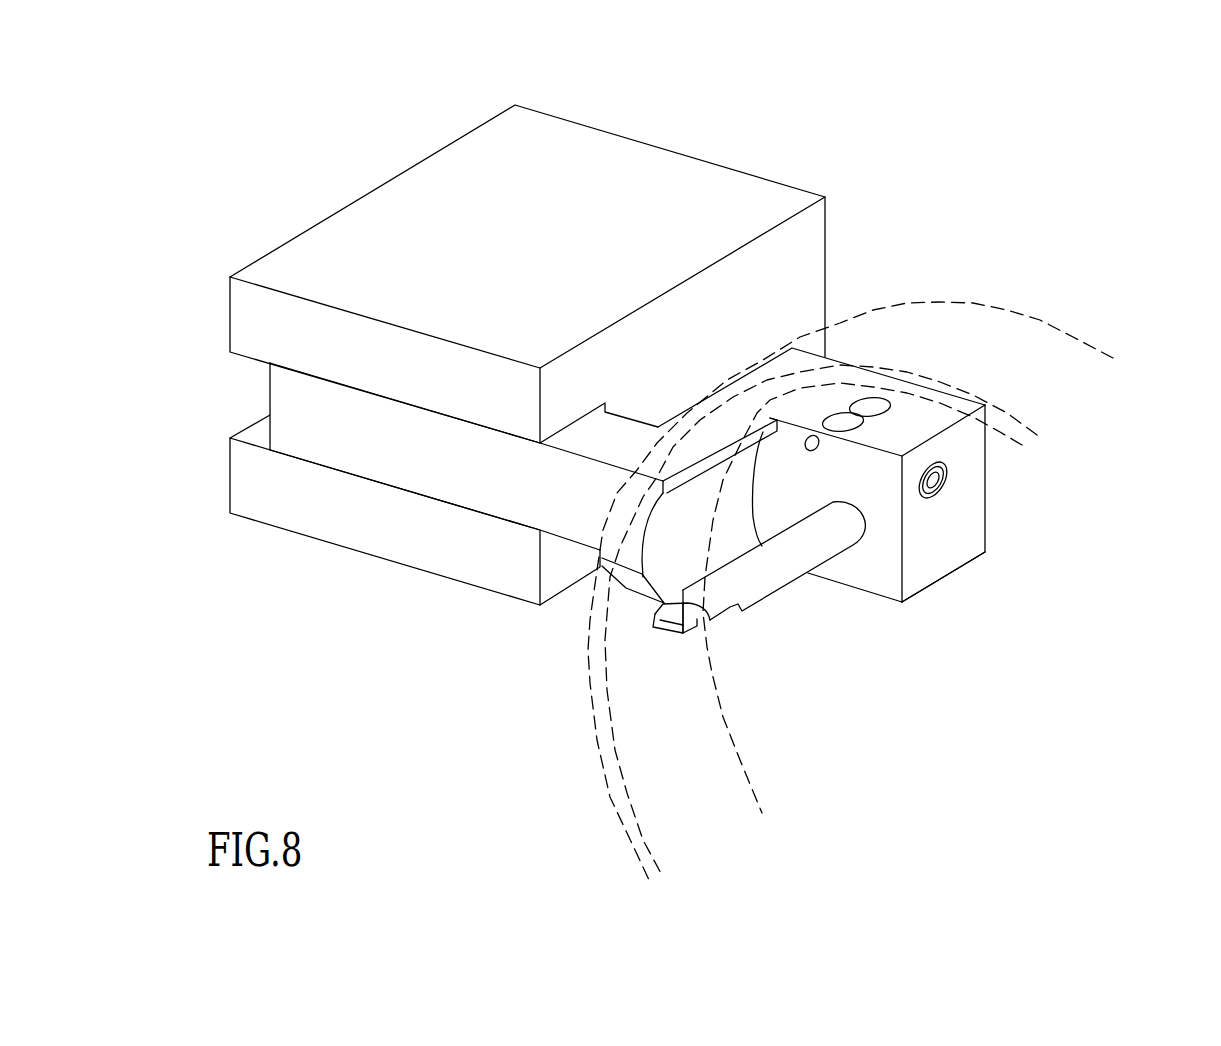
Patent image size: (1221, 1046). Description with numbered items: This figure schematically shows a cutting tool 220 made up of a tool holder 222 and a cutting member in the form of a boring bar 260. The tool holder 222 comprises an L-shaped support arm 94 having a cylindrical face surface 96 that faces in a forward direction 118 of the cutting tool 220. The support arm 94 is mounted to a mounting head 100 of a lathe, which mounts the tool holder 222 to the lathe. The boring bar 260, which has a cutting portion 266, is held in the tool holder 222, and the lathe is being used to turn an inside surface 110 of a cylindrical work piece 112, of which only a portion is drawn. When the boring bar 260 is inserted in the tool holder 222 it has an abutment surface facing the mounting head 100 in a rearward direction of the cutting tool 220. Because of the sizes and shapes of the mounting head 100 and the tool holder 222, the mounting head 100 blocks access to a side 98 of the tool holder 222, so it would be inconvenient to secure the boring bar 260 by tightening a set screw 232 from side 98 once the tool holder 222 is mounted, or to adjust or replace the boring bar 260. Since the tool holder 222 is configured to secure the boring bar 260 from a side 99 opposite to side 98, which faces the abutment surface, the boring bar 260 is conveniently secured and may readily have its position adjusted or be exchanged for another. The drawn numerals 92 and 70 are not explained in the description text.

The mounting head 100 is at (766, 162).
The support arm 94 is at (512, 490).
The side 98 is at (735, 373).
The cylindrical face surface 96 is at (673, 533).
The head block 92 is at (978, 522).
The side 99 is at (942, 547).
The tool holder 222 is at (948, 595).
The set screw 232 is at (952, 486).
The boring bar 260 is at (805, 555).
The cutting insert 70 is at (670, 634).
The cutting portion 266 is at (657, 618).
The inside surface 110 is at (672, 777).
The cylindrical work piece 112 is at (598, 758).
The forward direction 118 is at (1085, 272).
The cutting tool 220 is at (1062, 459).